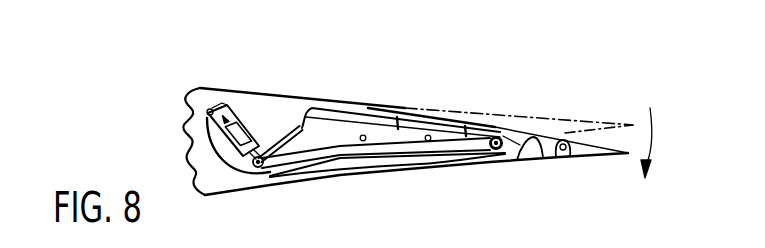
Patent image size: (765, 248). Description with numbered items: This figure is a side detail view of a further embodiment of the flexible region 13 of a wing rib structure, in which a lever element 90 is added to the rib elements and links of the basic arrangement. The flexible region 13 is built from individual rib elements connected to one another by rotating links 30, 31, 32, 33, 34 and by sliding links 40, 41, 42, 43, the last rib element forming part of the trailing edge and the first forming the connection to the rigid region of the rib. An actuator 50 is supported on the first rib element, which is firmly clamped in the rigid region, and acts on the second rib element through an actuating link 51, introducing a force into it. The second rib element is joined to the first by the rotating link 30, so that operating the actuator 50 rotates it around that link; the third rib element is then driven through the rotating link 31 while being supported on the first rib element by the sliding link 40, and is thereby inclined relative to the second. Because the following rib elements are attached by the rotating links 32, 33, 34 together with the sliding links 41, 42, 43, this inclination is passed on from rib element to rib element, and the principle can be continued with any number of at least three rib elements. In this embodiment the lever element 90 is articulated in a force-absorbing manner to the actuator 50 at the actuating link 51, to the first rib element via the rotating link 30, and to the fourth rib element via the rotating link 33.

The flexible region 13 is at (110, 79).
The rotating link 30 is at (290, 97).
The rotating link 31 is at (363, 135).
The rotating link 32 is at (428, 135).
The rotating link 33 is at (500, 117).
The rotating link 34 is at (566, 142).
The sliding link 40 is at (333, 127).
The sliding link 41 is at (397, 116).
The sliding link 42 is at (466, 125).
The sliding link 43 is at (533, 136).
The actuator 50 is at (233, 99).
The actuating link 51 is at (262, 121).
The lever element 90 is at (403, 155).